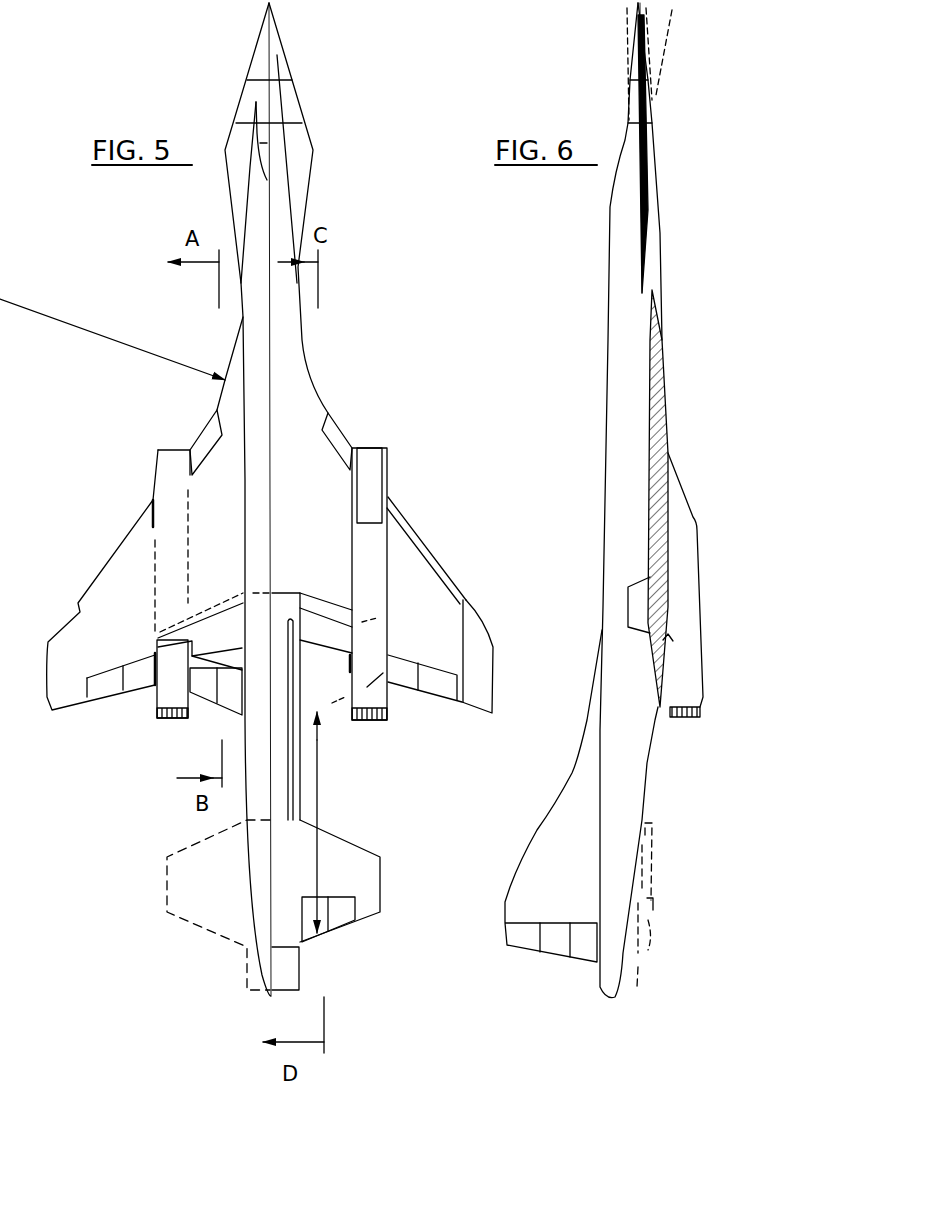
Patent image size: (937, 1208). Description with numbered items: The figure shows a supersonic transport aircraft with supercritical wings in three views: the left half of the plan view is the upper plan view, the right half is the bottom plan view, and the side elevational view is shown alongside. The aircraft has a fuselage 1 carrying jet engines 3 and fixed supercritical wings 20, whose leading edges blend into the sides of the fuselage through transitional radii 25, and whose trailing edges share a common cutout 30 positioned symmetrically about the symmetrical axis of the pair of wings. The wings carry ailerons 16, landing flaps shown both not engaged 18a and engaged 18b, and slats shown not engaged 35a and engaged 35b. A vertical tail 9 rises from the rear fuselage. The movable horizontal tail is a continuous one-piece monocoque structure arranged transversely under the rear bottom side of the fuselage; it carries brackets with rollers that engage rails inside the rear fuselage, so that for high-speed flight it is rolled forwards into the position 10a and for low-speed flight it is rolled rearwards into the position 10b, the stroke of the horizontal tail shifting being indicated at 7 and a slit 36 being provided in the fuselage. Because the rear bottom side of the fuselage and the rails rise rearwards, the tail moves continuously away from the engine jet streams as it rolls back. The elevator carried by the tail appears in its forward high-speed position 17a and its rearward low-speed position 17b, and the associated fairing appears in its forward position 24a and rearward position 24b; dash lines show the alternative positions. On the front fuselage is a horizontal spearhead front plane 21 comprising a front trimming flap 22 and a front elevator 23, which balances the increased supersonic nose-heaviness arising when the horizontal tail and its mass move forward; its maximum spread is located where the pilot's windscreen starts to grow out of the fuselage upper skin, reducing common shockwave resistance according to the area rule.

In FIG. 5, the fuselage 1 is at (282, 317).
In FIG. 6, the fuselage 1 is at (623, 325).
In FIG. 5, the jet engines 3 is at (372, 553).
In FIG. 6, the jet engines 3 is at (680, 523).
In FIG. 5, the stroke of the horizontal tail shifting 7 is at (317, 792).
In FIG. 6, the vertical tail 9 is at (570, 843).
In FIG. 5, the horizontal tail in its forward high-speed flight position 10a is at (177, 668).
In FIG. 6, the horizontal tail in its forward high-speed flight position 10a is at (655, 655).
In FIG. 5, the horizontal tail in its rearward low-speed flight position 10b is at (357, 880).
In FIG. 6, the horizontal tail in its rearward low-speed flight position 10b is at (650, 855).
In FIG. 5, the ailerons 16 is at (110, 683).
In FIG. 5, the elevator in its forward high-speed flight position 17a is at (210, 688).
In FIG. 6, the elevator in its forward high-speed flight position 17a is at (665, 678).
In FIG. 5, the elevator in its rearward low-speed flight position 17b is at (337, 917).
In FIG. 6, the elevator in its rearward low-speed flight position 17b is at (652, 907).
In FIG. 6, the landing flaps not engaged 18a is at (649, 578).
In FIG. 5, the landing flaps engaged 18b is at (330, 633).
In FIG. 6, the landing flaps engaged 18b is at (684, 653).
In FIG. 5, the fixed supercritical wings 20 is at (108, 625).
In FIG. 6, the fixed supercritical wings 20 is at (658, 412).
In FIG. 5, the spearhead front plane 21 is at (298, 143).
In FIG. 6, the spearhead front plane 21 is at (642, 157).
In FIG. 5, the front trimming flap 22 is at (288, 103).
In FIG. 6, the front trimming flap 22 is at (640, 108).
In FIG. 5, the front elevator 23 is at (273, 43).
In FIG. 6, the front elevator 23 is at (638, 62).
In FIG. 6, the fairing in its forward high-speed flight position 24a is at (655, 712).
In FIG. 6, the fairing in its rearward low-speed flight position 24b is at (647, 950).
In FIG. 5, the transitional radii between the leading edges of the wings and the sides of the f 25 is at (100, 337).
In FIG. 5, the common cutout in the trailing edges of the pair of wings 30 is at (401, 637).
In FIG. 5, the slat not engaged 35a is at (205, 442).
In FIG. 5, the slat engaged 35b is at (418, 548).
In FIG. 5, the slit 36 is at (288, 740).